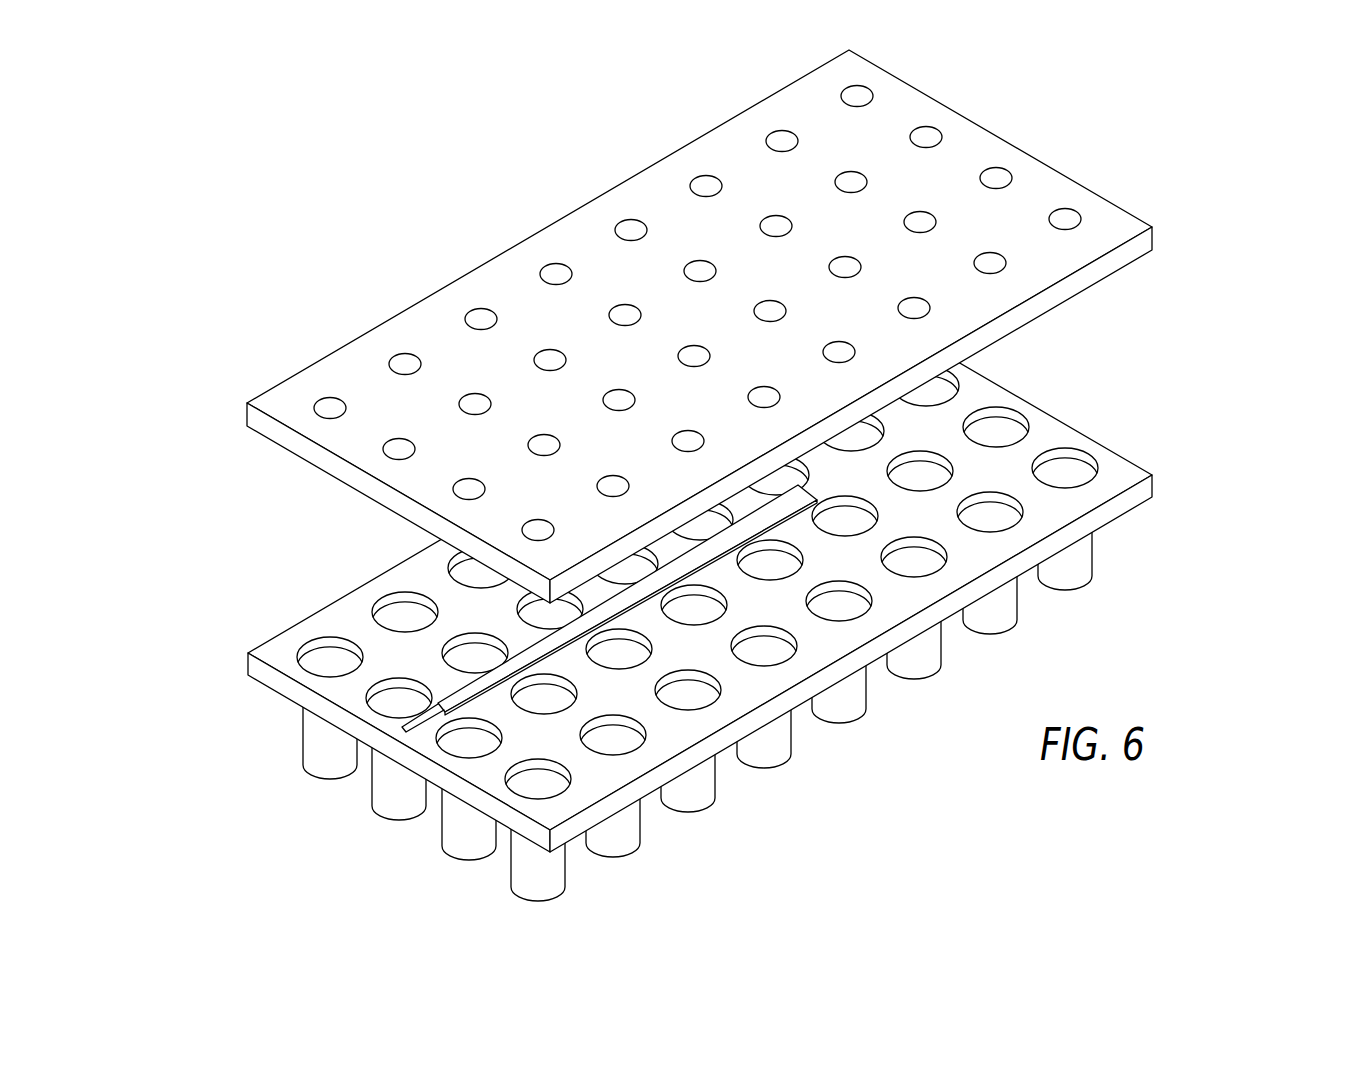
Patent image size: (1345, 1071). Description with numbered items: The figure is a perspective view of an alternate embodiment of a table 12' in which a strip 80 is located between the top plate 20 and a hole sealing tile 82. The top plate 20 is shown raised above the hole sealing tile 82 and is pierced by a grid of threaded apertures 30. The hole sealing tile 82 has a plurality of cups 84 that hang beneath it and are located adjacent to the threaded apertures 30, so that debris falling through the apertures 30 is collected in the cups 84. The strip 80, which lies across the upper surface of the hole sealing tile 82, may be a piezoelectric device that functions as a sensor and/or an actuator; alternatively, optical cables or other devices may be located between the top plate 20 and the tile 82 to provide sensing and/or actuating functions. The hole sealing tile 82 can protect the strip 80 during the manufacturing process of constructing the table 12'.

The table 12' is at (1235, 328).
The top plate 20 is at (615, 270).
The threaded apertures 30 is at (405, 363).
The strip 80 is at (537, 650).
The hole sealing tile 82 is at (278, 648).
The cups 84 is at (318, 737).